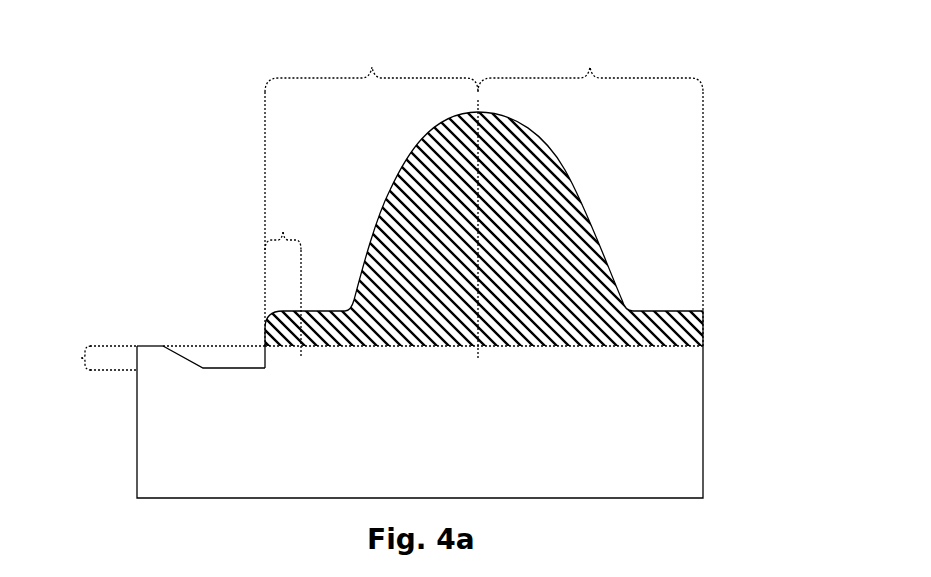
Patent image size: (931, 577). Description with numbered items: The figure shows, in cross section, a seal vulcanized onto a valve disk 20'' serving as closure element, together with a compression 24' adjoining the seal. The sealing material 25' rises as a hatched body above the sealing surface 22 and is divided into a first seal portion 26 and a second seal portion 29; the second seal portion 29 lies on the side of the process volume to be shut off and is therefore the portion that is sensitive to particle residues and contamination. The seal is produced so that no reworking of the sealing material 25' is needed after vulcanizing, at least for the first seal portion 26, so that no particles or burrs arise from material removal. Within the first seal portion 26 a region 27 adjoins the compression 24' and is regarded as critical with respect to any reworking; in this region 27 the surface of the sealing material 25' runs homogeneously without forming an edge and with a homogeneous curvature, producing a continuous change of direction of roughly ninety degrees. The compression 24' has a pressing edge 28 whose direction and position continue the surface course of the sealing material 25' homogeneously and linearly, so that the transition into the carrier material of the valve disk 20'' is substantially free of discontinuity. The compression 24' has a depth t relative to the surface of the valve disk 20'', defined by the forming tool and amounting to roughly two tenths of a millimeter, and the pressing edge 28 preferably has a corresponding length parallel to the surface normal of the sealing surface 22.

The valve disk 20'' is at (469, 422).
The sealing surface 22 is at (673, 347).
The compression 24' is at (186, 324).
The sealing material 25' is at (519, 229).
The first seal portion 26 is at (371, 187).
The region 27 is at (283, 274).
The pressing edge 28 is at (265, 347).
The second seal portion 29 is at (590, 187).
The depth t is at (80, 358).